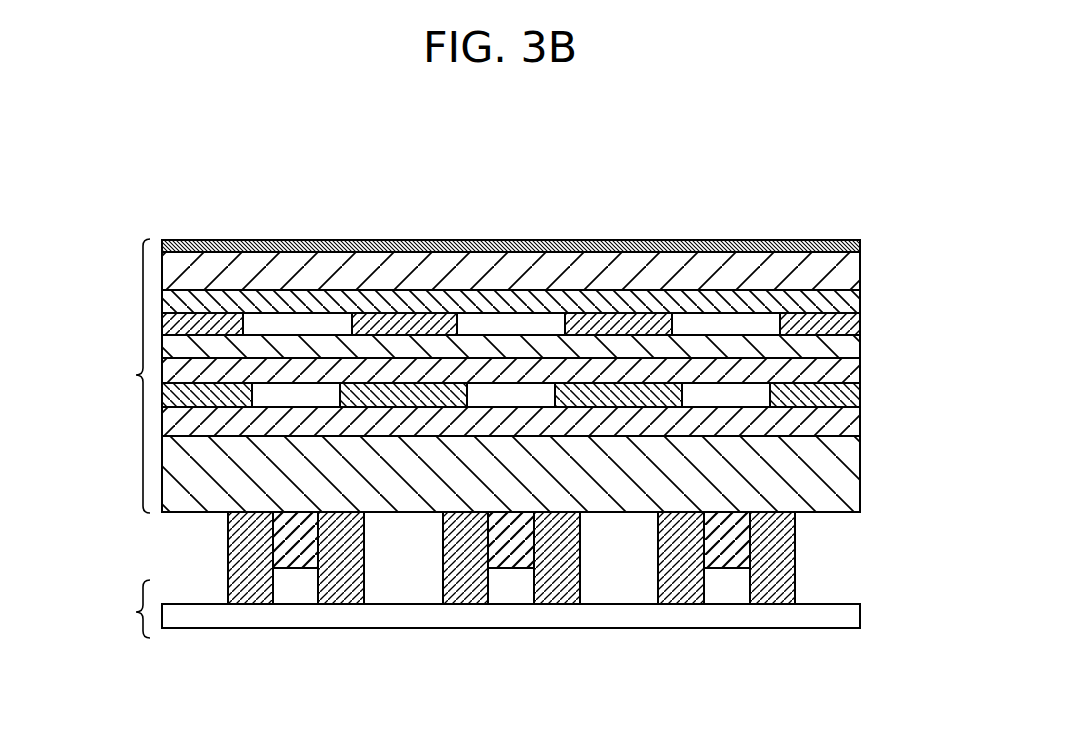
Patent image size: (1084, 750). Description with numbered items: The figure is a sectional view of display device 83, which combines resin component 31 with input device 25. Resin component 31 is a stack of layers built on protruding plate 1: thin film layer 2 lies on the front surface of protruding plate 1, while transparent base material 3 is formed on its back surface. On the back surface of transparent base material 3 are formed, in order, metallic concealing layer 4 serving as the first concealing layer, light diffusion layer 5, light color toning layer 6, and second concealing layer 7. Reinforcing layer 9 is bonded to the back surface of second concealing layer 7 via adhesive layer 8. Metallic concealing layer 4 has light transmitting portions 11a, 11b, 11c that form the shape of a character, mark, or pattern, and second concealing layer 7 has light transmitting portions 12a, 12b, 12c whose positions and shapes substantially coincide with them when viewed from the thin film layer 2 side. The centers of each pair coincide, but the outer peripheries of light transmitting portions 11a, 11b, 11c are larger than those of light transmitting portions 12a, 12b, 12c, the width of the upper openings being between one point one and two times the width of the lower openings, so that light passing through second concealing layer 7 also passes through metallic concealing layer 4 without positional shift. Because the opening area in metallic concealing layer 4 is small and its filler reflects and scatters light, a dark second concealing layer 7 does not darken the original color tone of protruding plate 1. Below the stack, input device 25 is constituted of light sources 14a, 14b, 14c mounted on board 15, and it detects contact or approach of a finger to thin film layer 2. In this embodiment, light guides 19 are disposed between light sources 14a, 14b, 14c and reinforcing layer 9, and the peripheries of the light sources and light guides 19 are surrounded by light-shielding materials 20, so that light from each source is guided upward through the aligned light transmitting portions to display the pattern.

The protruding plate 1 is at (850, 265).
The thin film layer 2 is at (830, 240).
The transparent base material 3 is at (850, 297).
The metallic concealing layer 4 is at (850, 325).
The light diffusion layer 5 is at (850, 352).
The light color toning layer 6 is at (850, 372).
The second concealing layer 7 is at (850, 392).
The adhesive layer 8 is at (852, 427).
The reinforcing layer 9 is at (850, 480).
The light transmitting portion 11a is at (315, 325).
The light transmitting portion 11b is at (542, 325).
The light transmitting portion 11c is at (750, 325).
The light transmitting portion 12a is at (287, 395).
The light transmitting portion 12b is at (512, 395).
The light transmitting portion 12c is at (715, 395).
The light source 14a is at (293, 592).
The light source 14b is at (512, 592).
The light source 14c is at (725, 592).
The board 15 is at (845, 613).
The light guide 19 is at (305, 545).
The light-shielding material 20 is at (250, 592).
The input device 25 is at (121, 609).
The resin component 31 is at (121, 376).
The display device 83 is at (123, 489).